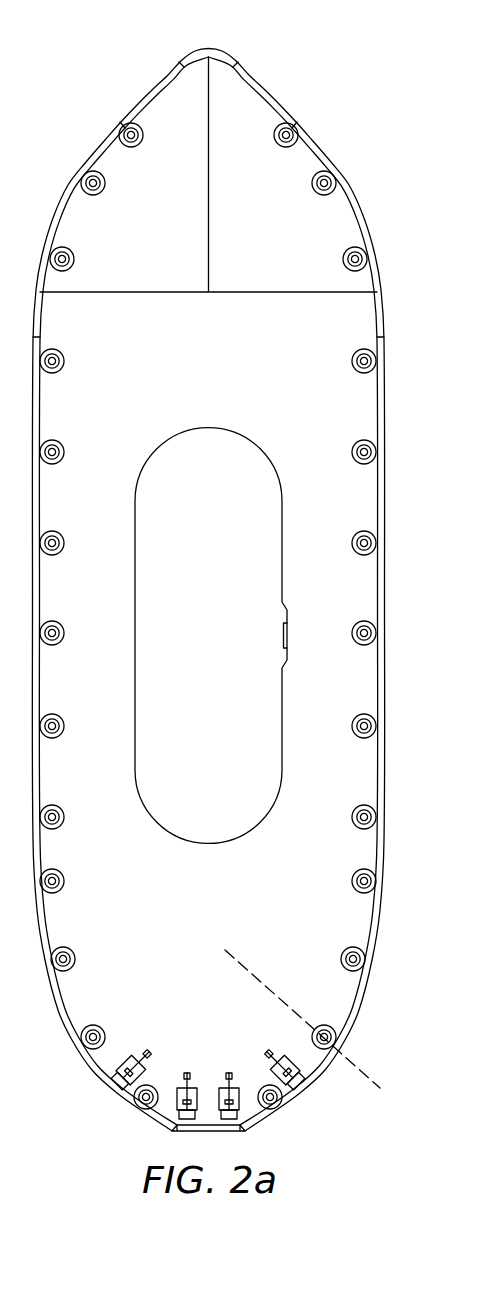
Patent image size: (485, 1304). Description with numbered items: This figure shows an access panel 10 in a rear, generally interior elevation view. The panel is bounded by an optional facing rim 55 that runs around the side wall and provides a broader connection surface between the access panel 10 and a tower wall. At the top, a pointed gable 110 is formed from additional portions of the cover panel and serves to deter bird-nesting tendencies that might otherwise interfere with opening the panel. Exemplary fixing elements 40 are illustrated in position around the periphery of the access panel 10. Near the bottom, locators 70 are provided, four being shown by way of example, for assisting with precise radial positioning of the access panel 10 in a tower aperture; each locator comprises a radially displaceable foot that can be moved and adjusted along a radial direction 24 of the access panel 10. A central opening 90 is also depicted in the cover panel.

The access panel 10 is at (233, 577).
The facing rim 55 is at (360, 205).
The pointed gable 110 is at (190, 85).
The fixing elements 40 is at (376, 727).
The hatch 90 is at (268, 504).
The locators 70 is at (110, 1067).
The radial direction 24 is at (362, 1070).